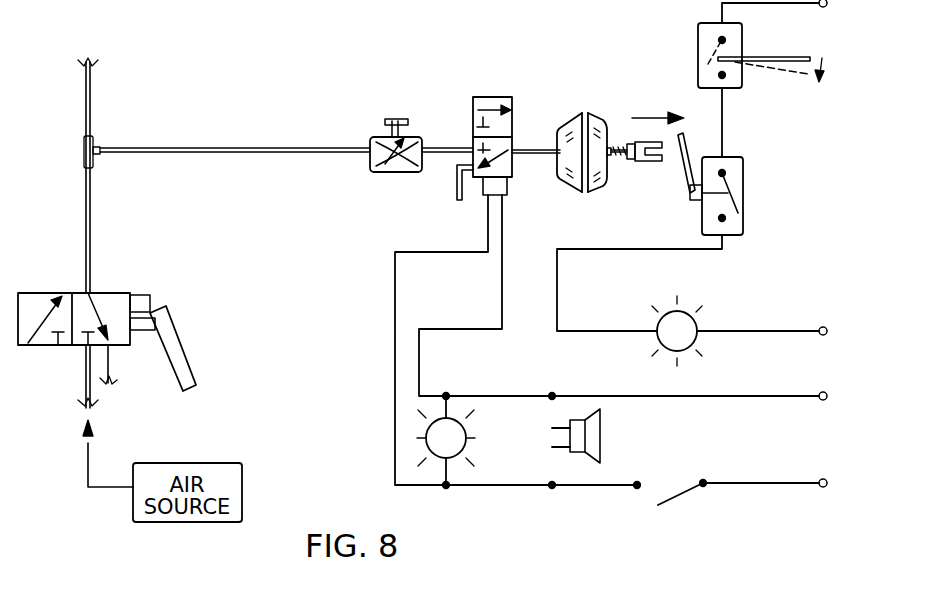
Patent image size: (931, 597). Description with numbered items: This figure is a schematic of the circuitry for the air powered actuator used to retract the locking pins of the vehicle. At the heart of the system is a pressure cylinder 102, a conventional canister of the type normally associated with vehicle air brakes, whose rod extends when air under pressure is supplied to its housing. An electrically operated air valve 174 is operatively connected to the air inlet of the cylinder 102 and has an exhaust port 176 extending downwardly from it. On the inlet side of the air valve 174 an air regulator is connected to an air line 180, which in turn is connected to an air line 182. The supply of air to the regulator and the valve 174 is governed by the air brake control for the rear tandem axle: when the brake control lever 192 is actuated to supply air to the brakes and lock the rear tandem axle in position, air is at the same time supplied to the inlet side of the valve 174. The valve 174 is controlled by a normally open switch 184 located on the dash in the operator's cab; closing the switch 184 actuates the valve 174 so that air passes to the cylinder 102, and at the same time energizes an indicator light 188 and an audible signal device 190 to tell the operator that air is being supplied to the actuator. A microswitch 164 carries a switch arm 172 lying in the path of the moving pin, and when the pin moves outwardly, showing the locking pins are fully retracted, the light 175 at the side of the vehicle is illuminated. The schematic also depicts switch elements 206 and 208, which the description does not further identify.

The pressure cylinder 102 is at (570, 188).
The microswitch 164 is at (750, 222).
The switch arm 172 is at (678, 172).
The air valve 174 is at (512, 97).
The light 175 is at (685, 327).
The exhaust port 176 is at (455, 190).
The air line 180 is at (195, 148).
The air line 182 is at (92, 233).
The switch 184 is at (678, 480).
The indicator light 188 is at (455, 436).
The audible signal device 190 is at (595, 431).
The brake control lever 192 is at (178, 357).
The limit switch 206 is at (750, 91).
The switch arm 208 is at (775, 53).